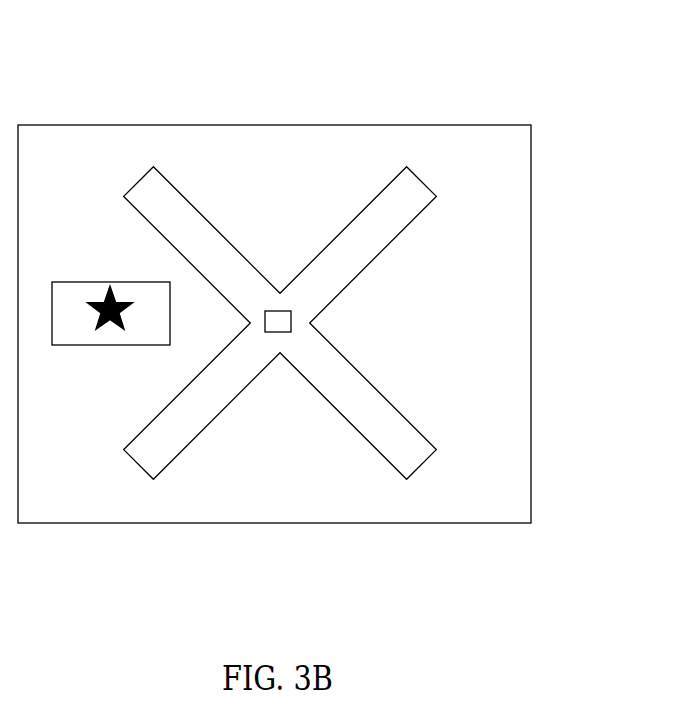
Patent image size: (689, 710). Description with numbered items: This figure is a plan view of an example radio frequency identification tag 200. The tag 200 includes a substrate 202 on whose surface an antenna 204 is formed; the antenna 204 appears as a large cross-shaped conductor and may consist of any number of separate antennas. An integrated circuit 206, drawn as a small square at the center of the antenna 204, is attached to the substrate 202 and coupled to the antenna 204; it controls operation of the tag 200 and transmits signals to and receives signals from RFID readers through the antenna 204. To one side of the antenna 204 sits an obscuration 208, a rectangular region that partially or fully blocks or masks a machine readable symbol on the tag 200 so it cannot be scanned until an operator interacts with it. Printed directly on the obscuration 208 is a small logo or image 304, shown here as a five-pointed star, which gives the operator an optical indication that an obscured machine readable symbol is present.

The RFID tag 200 is at (340, 286).
The substrate 202 is at (530, 223).
The antenna 204 is at (187, 203).
The integrated circuit 206 is at (276, 320).
The obscuration 208 is at (111, 323).
The image 304 is at (101, 300).